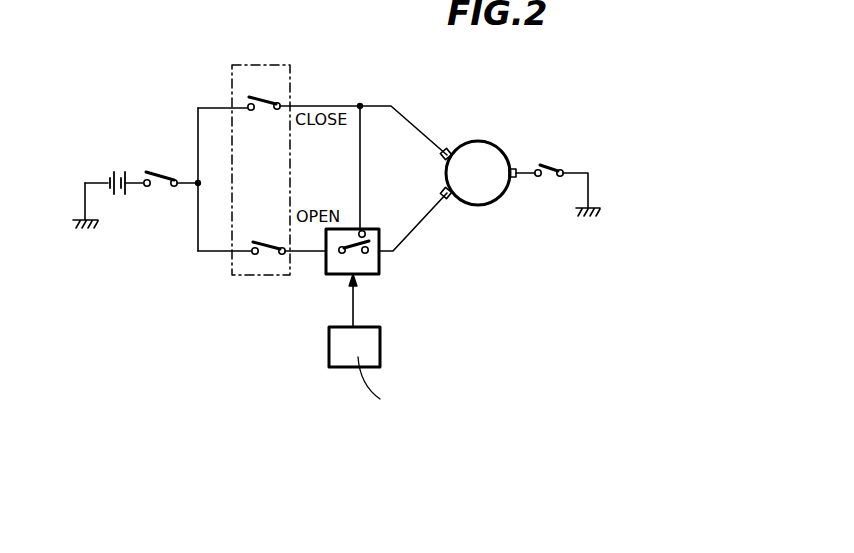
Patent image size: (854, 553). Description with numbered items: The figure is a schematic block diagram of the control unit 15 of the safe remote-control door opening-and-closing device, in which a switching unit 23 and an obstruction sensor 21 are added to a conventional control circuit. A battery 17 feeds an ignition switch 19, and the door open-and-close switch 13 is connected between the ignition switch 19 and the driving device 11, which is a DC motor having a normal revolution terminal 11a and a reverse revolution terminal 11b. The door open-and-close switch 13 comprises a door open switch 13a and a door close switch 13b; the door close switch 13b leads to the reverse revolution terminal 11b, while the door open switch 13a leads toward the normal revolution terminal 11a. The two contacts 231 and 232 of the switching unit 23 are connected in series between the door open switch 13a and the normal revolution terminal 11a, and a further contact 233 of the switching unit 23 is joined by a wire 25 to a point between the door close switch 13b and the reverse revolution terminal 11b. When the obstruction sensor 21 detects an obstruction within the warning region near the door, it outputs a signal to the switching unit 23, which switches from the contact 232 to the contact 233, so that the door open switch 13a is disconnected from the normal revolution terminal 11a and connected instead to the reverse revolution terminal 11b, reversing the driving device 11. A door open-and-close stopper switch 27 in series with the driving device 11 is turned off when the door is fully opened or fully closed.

The driving device 11 is at (495, 167).
The normal revolution terminal 11a is at (451, 198).
The reverse revolution terminal 11b is at (446, 150).
The door open-and-close switch 13 is at (230, 90).
The door open switch 13a is at (268, 262).
The door close switch 13b is at (269, 97).
The control unit 15 is at (329, 106).
The battery 17 is at (112, 169).
The ignition switch 19 is at (157, 168).
The obstruction sensor 21 is at (382, 345).
The switching unit 23 is at (365, 252).
The contact 231 is at (333, 259).
The contact 232 is at (368, 258).
The contact 233 is at (364, 230).
The wire 25 is at (362, 160).
The door open-and-close stopper switch 27 is at (548, 178).